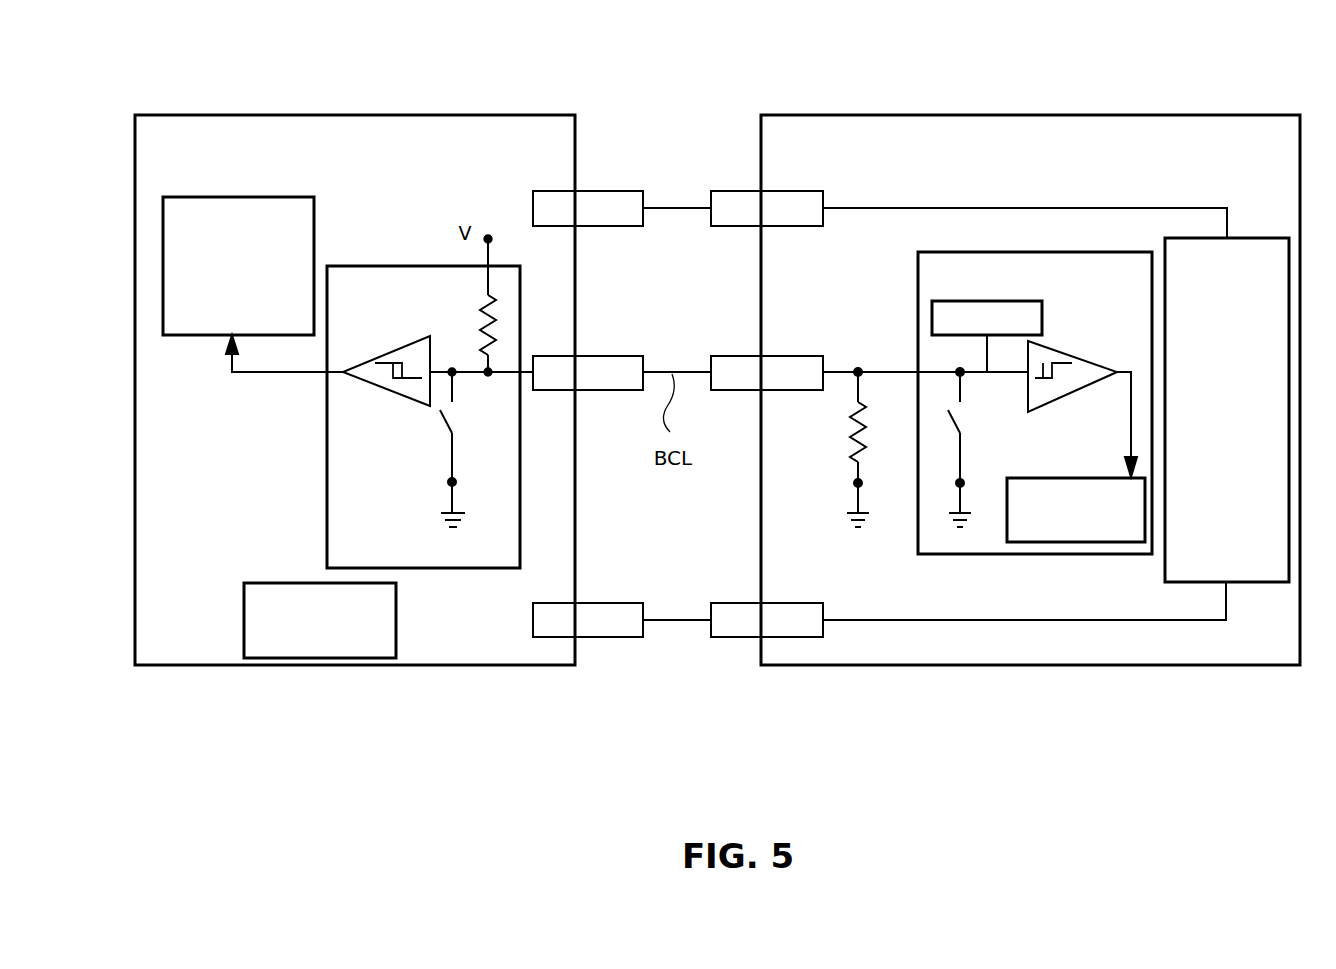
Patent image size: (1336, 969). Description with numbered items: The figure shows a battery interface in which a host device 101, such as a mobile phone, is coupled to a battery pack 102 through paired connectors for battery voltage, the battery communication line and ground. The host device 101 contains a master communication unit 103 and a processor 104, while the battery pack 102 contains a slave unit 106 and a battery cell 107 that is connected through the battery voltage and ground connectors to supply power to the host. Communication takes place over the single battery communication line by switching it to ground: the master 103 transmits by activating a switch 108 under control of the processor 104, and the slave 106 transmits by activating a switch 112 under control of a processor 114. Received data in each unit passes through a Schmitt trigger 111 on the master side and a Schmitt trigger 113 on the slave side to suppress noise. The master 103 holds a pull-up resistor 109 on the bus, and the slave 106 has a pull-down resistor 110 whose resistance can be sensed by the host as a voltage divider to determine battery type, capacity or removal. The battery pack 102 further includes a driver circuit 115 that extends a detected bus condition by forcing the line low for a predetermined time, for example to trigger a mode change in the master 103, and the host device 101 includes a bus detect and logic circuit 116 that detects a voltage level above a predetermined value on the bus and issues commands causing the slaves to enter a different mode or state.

The host device 101 is at (335, 115).
The battery pack 102 is at (1032, 115).
The master communication unit 103 is at (368, 266).
The processor 104 is at (253, 197).
The slave unit 106 is at (1020, 252).
The battery cell 107 is at (1263, 238).
The switch 108 is at (445, 443).
The pull-up resistor 109 is at (503, 320).
The pull-down resistor 110 is at (833, 430).
The Schmitt trigger 111 is at (380, 388).
The switch 112 is at (973, 425).
The Schmitt trigger 113 is at (1072, 360).
The processor 114 is at (1075, 542).
The driver circuit 115 is at (932, 317).
The bus detect and logic circuit 116 is at (397, 622).